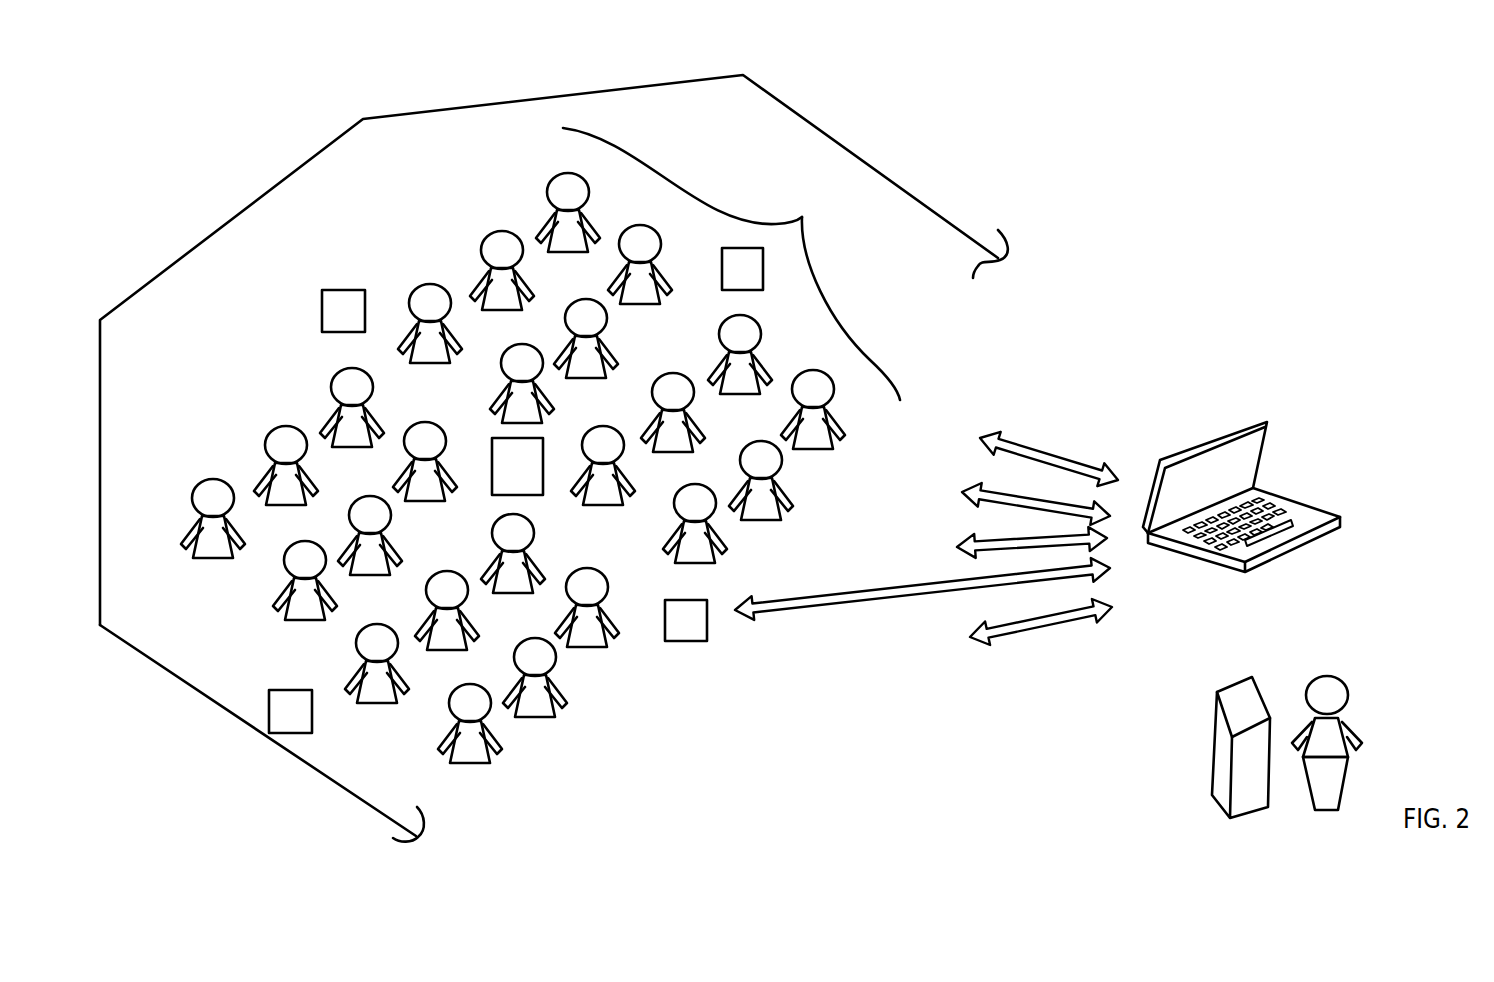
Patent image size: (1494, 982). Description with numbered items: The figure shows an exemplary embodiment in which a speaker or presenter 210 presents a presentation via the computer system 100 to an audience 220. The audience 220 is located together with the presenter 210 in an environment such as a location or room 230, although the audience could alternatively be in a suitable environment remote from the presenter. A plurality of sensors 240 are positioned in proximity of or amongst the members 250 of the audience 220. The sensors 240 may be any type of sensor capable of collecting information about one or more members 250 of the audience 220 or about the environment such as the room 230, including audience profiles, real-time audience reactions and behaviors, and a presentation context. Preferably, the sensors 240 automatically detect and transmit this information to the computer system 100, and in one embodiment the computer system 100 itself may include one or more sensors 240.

The computer system 100 is at (1267, 422).
The presenter 210 is at (1335, 682).
The audience 220 is at (802, 219).
The room 230 is at (862, 158).
The sensors 240 is at (338, 308).
The members 250 is at (500, 250).